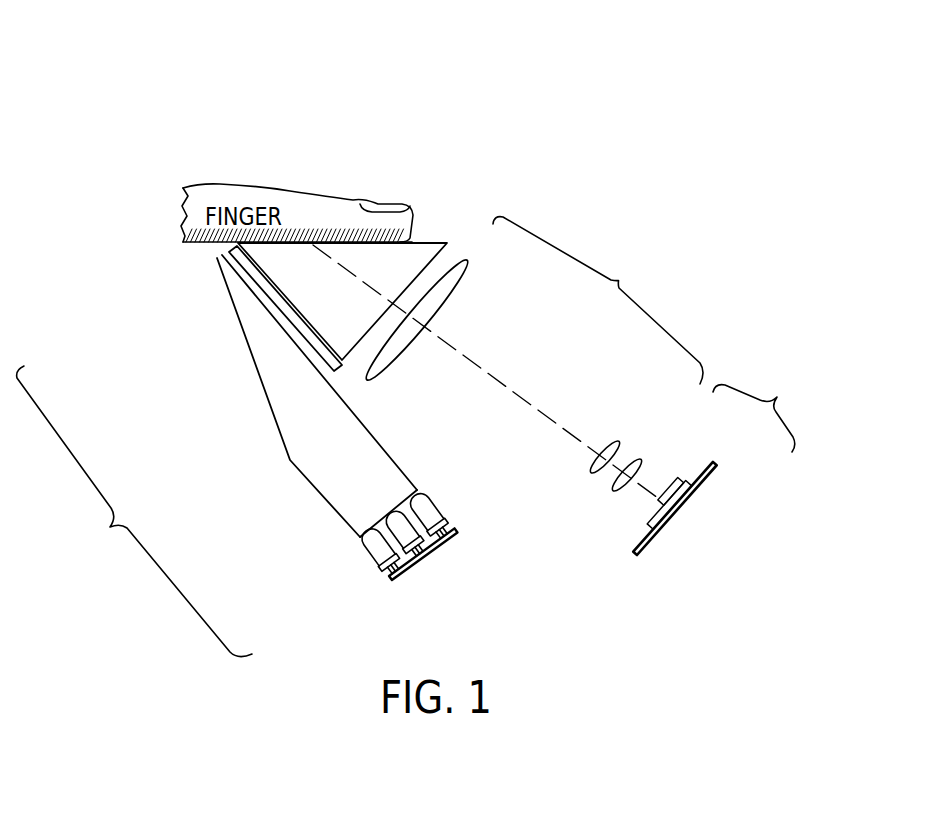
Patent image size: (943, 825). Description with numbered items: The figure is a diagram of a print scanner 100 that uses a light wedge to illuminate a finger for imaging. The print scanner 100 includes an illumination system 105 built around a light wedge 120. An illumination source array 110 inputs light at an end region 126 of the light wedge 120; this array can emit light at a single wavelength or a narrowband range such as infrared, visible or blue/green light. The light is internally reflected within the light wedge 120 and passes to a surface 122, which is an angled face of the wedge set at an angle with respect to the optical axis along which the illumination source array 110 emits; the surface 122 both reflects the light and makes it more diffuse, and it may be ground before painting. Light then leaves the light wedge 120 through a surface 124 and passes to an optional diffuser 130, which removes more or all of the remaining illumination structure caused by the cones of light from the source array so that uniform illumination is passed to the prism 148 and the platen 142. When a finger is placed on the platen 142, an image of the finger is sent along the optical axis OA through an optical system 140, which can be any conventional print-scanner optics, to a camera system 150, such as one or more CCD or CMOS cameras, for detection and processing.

The print scanner 100 is at (423, 147).
The illumination system 105 is at (134, 511).
The illumination source array 110 is at (337, 533).
The light wedge 120 is at (290, 396).
The surface 122 is at (252, 355).
The surface 124 is at (358, 420).
The end region 126 is at (387, 520).
The diffuser 130 is at (332, 369).
The optical system 140 is at (661, 300).
The platen 142 is at (432, 243).
The prism 148 is at (358, 312).
The camera system 150 is at (733, 454).
The optical axis OA is at (462, 348).